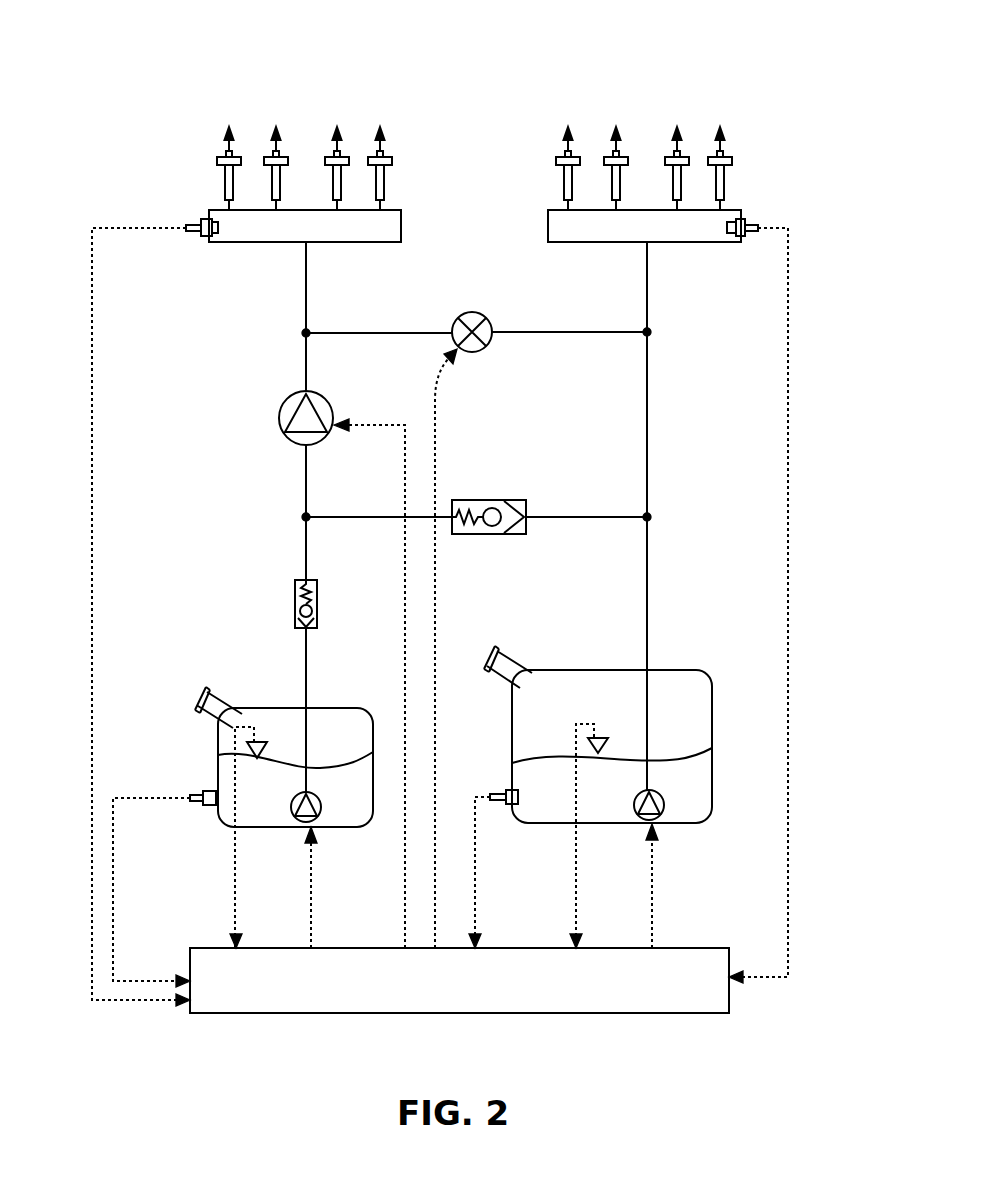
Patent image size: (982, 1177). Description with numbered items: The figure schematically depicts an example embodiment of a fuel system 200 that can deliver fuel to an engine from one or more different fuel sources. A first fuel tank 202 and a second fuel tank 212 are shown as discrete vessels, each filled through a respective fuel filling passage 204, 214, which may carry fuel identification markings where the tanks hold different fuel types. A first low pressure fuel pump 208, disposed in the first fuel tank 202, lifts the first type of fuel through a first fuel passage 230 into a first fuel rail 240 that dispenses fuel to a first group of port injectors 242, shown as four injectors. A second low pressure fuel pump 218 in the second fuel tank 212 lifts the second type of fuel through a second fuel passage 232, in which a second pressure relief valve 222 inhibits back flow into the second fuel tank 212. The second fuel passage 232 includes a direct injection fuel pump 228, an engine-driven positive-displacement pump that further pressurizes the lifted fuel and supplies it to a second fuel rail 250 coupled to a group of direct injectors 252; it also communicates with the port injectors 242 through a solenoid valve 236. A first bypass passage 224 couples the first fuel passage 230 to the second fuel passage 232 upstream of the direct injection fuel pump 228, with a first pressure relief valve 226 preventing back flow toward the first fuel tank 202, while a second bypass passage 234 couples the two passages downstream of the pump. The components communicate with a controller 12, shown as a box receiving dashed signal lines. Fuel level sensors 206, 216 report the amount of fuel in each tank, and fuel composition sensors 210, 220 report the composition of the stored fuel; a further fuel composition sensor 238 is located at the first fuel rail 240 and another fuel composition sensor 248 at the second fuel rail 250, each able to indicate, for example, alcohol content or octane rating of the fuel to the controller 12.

The fuel system 200 is at (700, 33).
The controller 12 is at (459, 980).
The first fuel tank 202 is at (697, 668).
The fuel filling passage 204 is at (512, 662).
The fuel level sensor 206 is at (597, 733).
The first low pressure fuel pump 208 is at (662, 793).
The fuel composition sensor 210 is at (500, 790).
The second fuel tank 212 is at (335, 708).
The fuel filling passage 214 is at (216, 697).
The fuel level sensor 216 is at (258, 738).
The second low pressure fuel pump 218 is at (320, 794).
The fuel composition sensor 220 is at (198, 794).
The second pressure relief valve 222 is at (317, 604).
The first bypass passage 224 is at (572, 516).
The first pressure relief valve 226 is at (490, 500).
The direct injection fuel pump 228 is at (323, 393).
The first fuel passage 230 is at (648, 408).
The second fuel passage 232 is at (308, 305).
The second bypass passage 234 is at (572, 332).
The solenoid valve 236 is at (480, 312).
The fuel composition sensor 238 is at (749, 222).
The first fuel rail 240 is at (675, 243).
The first group of port injectors 242 is at (670, 155).
The fuel composition sensor 248 is at (198, 220).
The second fuel rail 250 is at (395, 210).
The group of direct injectors 252 is at (330, 155).